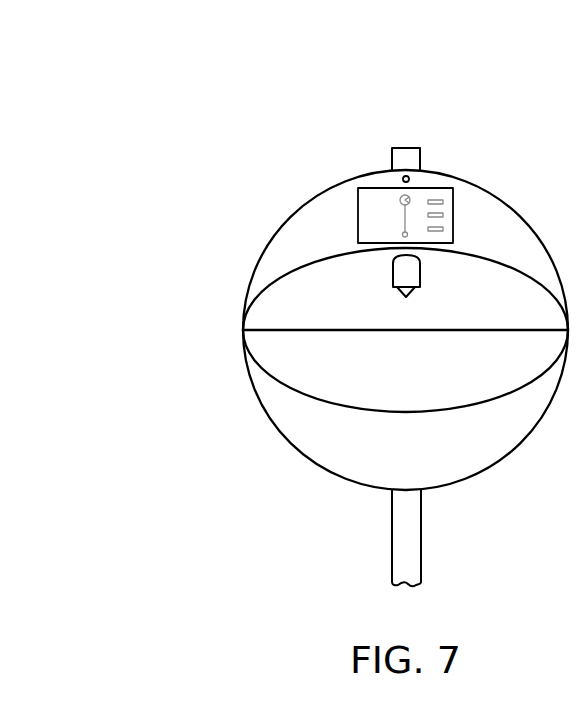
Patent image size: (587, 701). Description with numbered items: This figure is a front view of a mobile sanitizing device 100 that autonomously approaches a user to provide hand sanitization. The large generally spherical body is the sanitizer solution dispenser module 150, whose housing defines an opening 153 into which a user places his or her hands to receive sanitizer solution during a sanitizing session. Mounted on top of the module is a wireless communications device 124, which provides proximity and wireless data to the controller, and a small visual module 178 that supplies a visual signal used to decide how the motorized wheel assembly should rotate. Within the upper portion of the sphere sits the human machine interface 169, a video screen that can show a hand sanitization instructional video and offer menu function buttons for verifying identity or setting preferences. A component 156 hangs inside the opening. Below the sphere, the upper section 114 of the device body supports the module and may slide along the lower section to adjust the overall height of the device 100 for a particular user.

The mobile sanitizing device 100 is at (125, 103).
The sanitizer solution dispenser module 150 is at (292, 186).
The opening 153 is at (296, 365).
The wireless communications device 124 is at (405, 148).
The visual module 178 is at (409, 179).
The human machine interface 169 is at (453, 210).
The sensor 156 is at (420, 275).
The upper section 114 is at (421, 527).